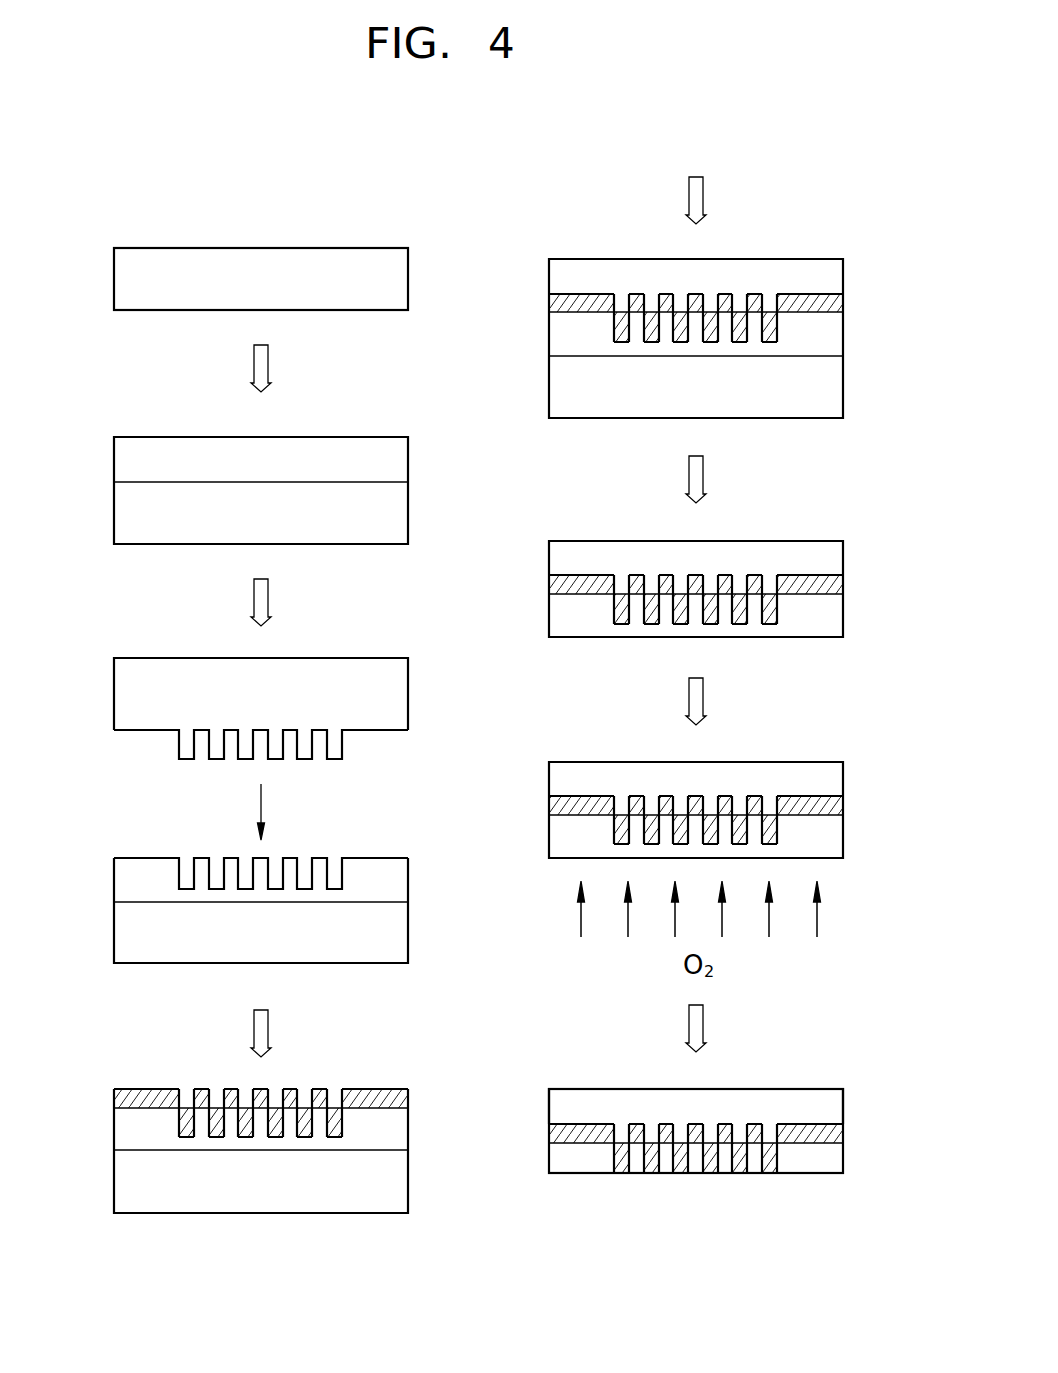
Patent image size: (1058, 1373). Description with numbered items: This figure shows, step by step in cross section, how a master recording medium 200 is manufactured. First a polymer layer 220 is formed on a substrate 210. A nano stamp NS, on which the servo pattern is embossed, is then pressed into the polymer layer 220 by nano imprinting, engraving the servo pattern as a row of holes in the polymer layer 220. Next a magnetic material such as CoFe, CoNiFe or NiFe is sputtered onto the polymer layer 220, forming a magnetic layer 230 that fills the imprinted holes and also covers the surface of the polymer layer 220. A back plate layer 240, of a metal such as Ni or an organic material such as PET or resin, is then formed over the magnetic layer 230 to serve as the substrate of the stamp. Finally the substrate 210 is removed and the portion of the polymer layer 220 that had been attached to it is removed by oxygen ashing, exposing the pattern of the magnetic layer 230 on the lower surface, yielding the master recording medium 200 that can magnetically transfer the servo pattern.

The master recording medium 200 is at (614, 1207).
The substrate 210 is at (120, 277).
The polymer layer 220 is at (120, 450).
The magnetic layer 230 is at (120, 1099).
The back plate layer 240 is at (840, 271).
The nano stamp NS is at (120, 696).